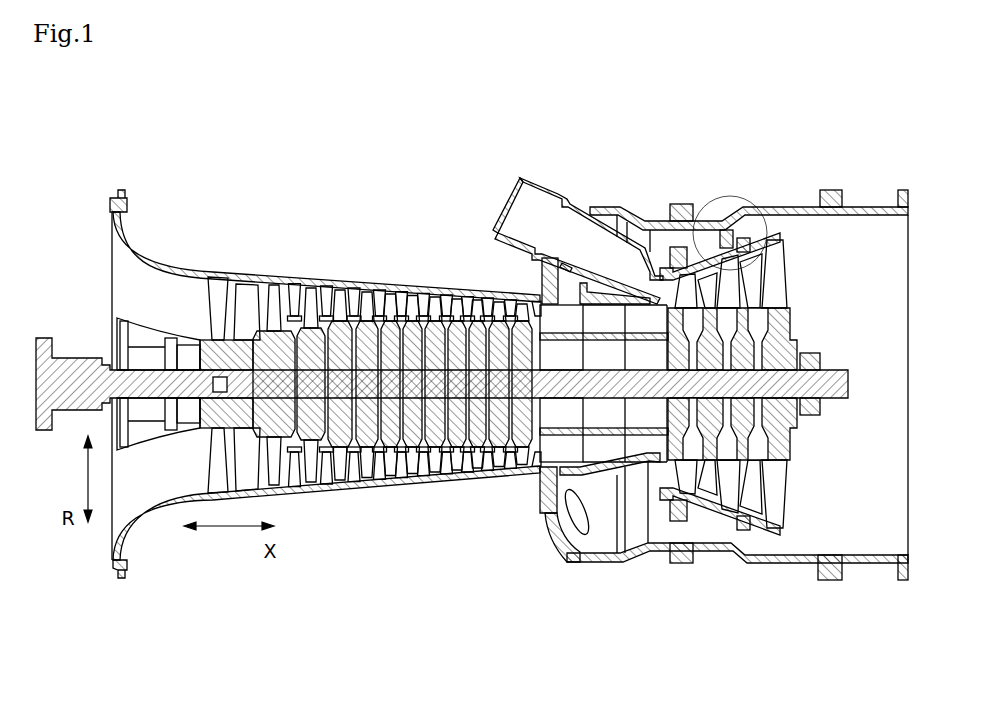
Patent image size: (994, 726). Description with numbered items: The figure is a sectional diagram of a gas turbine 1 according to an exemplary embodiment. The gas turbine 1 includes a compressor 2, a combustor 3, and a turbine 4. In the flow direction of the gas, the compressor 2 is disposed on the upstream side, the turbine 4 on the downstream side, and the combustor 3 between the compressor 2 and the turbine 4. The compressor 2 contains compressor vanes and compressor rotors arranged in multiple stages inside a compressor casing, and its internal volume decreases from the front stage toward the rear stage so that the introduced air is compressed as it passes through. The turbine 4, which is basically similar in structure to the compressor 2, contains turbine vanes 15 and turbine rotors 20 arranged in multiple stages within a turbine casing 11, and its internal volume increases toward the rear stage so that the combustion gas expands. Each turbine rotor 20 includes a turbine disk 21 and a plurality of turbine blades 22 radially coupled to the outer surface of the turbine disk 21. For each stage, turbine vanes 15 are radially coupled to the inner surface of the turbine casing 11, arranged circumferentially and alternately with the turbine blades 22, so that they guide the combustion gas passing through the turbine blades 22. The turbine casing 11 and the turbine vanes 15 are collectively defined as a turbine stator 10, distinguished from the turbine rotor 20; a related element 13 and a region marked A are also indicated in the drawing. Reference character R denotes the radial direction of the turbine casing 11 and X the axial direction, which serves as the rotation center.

The gas turbine 1 is at (195, 98).
The compressor 2 is at (290, 256).
The combustor 3 is at (538, 184).
The turbine 4 is at (776, 188).
The turbine stator 10 is at (700, 643).
The turbine casing 11 is at (693, 565).
The vane carrier 13 is at (728, 548).
The turbine vanes 15 is at (764, 514).
The turbine rotor 20 is at (902, 130).
The turbine disk 21 is at (790, 350).
The turbine blades 22 is at (778, 286).
The detail region A is at (714, 190).